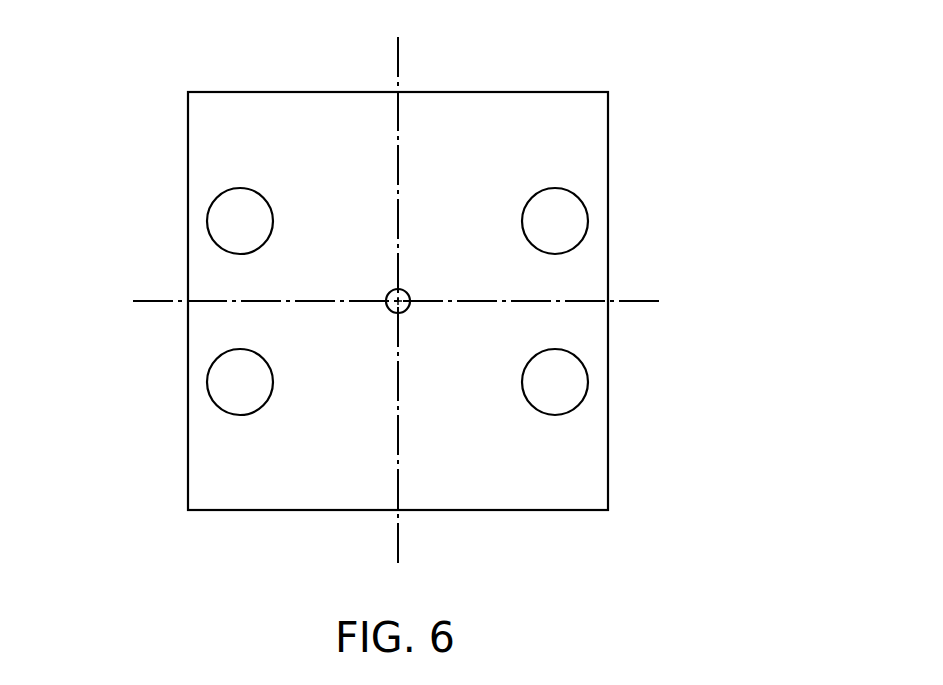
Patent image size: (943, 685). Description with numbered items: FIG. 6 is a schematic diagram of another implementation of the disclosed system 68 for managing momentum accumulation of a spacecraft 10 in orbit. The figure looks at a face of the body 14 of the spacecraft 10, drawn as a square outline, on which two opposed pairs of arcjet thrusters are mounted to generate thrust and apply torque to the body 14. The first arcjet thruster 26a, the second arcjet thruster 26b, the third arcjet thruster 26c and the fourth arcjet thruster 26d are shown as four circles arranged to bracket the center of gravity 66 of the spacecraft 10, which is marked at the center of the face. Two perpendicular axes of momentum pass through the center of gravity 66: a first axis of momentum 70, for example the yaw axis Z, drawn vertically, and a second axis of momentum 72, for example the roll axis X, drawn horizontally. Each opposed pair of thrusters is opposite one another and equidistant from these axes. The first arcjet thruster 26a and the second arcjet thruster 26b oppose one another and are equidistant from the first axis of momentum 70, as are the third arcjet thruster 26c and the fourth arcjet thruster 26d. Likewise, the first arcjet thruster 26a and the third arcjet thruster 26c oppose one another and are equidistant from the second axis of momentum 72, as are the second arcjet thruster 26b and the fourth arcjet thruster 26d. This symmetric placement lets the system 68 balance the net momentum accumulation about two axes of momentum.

The spacecraft 10 is at (779, 90).
The body 14 is at (608, 146).
The first arcjet thruster 26a is at (258, 194).
The second arcjet thruster 26b is at (537, 195).
The third arcjet thruster 26c is at (263, 407).
The fourth arcjet thruster 26d is at (537, 407).
The center of gravity 66 is at (408, 290).
The system 68 is at (78, 159).
The first axis of momentum 70 is at (399, 540).
The second axis of momentum 72 is at (645, 302).